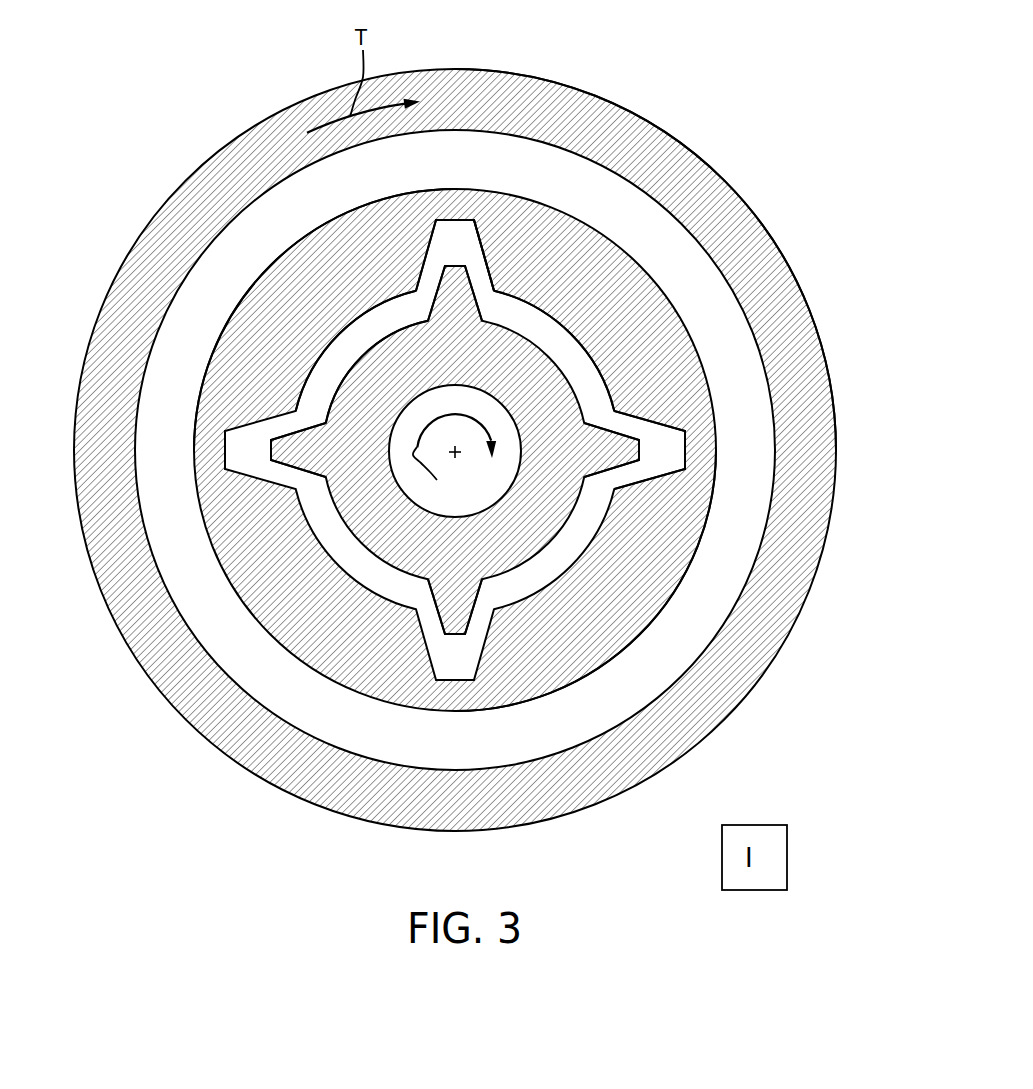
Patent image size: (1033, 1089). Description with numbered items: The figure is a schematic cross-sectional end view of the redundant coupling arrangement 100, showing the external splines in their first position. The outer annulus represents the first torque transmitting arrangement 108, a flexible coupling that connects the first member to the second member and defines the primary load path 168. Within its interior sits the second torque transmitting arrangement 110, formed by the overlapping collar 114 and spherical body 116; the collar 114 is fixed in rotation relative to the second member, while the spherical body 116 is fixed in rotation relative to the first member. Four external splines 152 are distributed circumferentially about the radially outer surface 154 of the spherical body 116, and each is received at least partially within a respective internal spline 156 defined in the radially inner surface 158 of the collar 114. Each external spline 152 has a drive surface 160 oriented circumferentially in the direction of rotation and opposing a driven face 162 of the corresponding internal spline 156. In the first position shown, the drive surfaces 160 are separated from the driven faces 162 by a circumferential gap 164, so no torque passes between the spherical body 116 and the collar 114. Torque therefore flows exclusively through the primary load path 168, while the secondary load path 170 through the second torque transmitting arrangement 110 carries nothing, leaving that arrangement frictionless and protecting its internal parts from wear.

The redundant coupling arrangement 100 is at (222, 868).
The first torque transmitting arrangement 108 is at (266, 84).
The second torque transmitting arrangement 110 is at (270, 233).
The collar 114 is at (533, 672).
The spherical body 116 is at (397, 533).
The external spline 152 is at (453, 290).
The radially outer surface 154 is at (373, 347).
The internal spline 156 is at (472, 256).
The radially inner surface 158 is at (320, 355).
The drive surface 160 is at (487, 305).
The driven face 162 is at (480, 250).
The circumferential gap 164 is at (633, 475).
The primary load path 168 is at (818, 390).
The secondary load path 170 is at (616, 616).